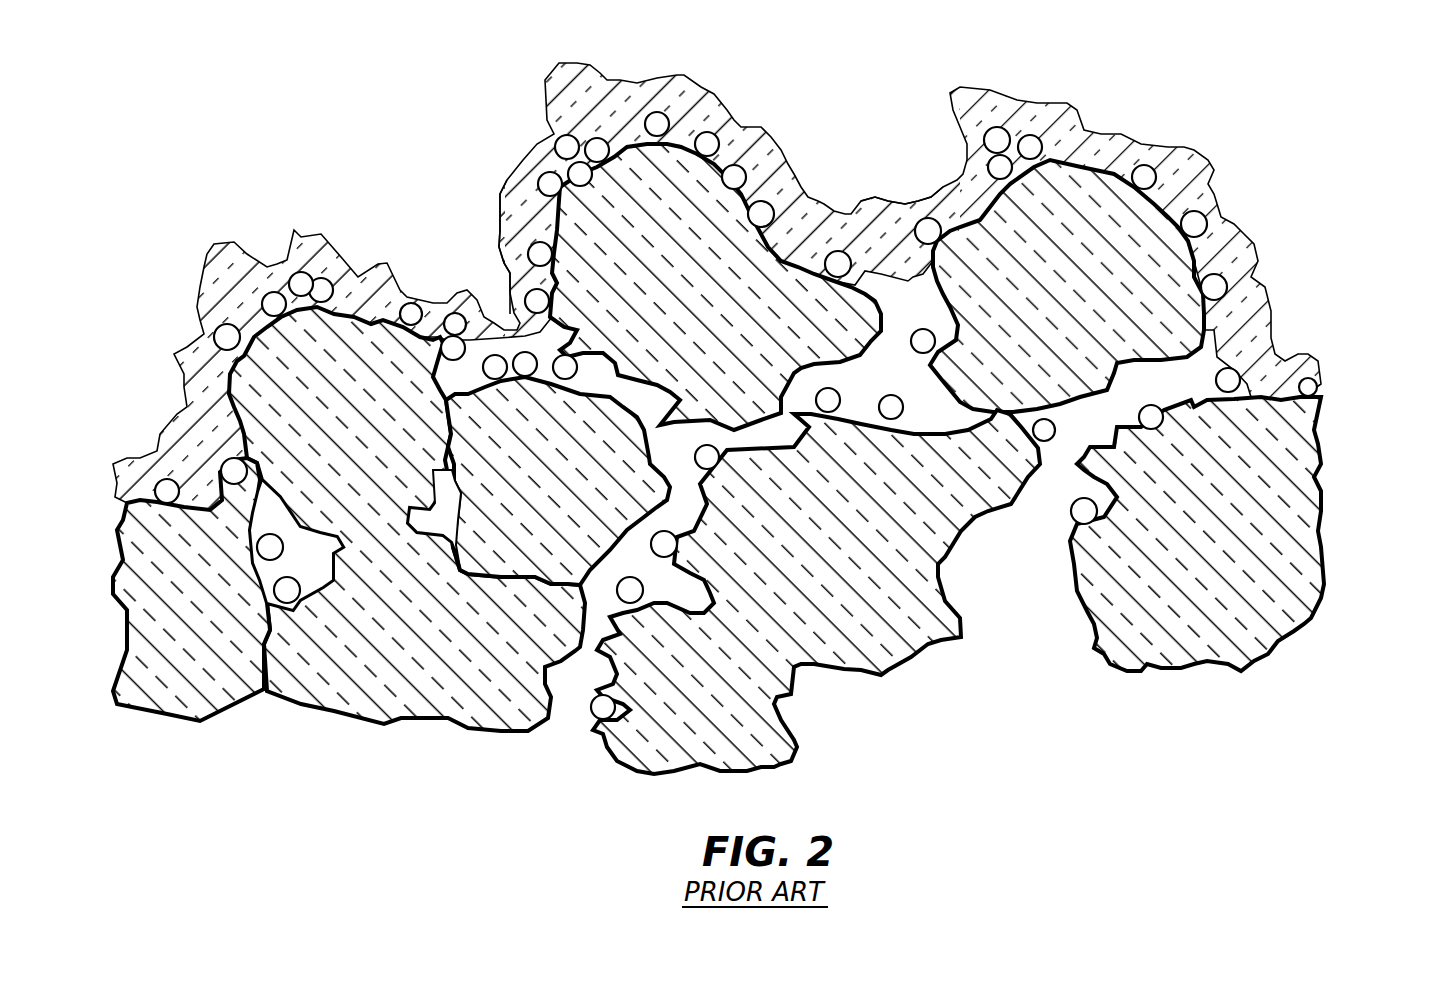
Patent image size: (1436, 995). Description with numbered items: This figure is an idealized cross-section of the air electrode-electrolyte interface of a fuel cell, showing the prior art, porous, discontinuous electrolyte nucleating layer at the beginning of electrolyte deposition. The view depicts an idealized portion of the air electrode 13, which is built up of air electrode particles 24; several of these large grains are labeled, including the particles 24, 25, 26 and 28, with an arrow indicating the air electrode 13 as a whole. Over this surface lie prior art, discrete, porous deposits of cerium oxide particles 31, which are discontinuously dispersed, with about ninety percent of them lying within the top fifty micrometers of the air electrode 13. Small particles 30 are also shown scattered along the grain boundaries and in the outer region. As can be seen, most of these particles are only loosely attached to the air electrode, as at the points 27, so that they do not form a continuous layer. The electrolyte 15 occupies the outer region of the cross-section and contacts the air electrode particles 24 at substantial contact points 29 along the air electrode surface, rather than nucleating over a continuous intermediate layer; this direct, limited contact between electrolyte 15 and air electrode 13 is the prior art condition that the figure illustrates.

The air electrode 13 is at (1338, 524).
The electrolyte 15 is at (608, 105).
The air electrode particles 24 is at (1117, 624).
The abrasive grain 25 is at (714, 214).
The abrasive grain 26 is at (930, 307).
The points 27 is at (919, 350).
The abrasive grain 28 is at (667, 456).
The contact points 29 is at (530, 218).
The fine particle 30 is at (296, 280).
The cerium oxide particles 31 is at (893, 418).